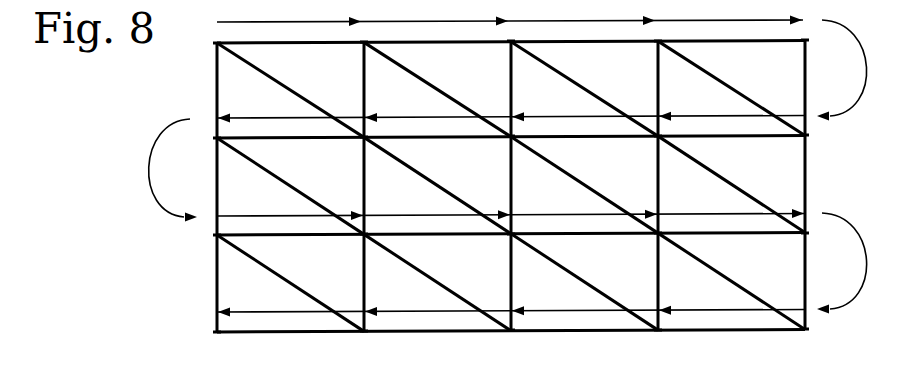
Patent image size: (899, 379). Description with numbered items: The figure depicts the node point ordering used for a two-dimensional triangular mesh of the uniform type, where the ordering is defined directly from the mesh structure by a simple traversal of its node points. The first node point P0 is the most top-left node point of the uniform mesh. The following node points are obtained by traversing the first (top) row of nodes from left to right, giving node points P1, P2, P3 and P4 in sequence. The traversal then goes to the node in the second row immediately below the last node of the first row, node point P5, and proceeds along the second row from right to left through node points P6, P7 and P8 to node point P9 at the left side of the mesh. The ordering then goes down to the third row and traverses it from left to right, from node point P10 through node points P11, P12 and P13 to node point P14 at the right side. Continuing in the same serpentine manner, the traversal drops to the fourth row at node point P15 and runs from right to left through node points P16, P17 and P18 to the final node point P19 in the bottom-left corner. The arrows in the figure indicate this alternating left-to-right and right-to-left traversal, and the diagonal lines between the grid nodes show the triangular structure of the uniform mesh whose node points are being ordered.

The first node point P0 is at (194, 65).
The node point P1 is at (348, 64).
The node point P2 is at (495, 63).
The node point P3 is at (642, 63).
The node point P4 is at (789, 62).
The node point P5 is at (789, 159).
The node point P6 is at (642, 160).
The node point P7 is at (495, 160).
The node point P8 is at (348, 161).
The node point P9 is at (194, 162).
The node point P10 is at (195, 256).
The node point P11 is at (343, 255).
The node point P12 is at (488, 255).
The node point P13 is at (634, 254).
The node point P14 is at (782, 254).
The node point P15 is at (782, 351).
The node point P16 is at (635, 352).
The node point P17 is at (487, 352).
The node point P18 is at (340, 353).
The node point P19 is at (195, 354).